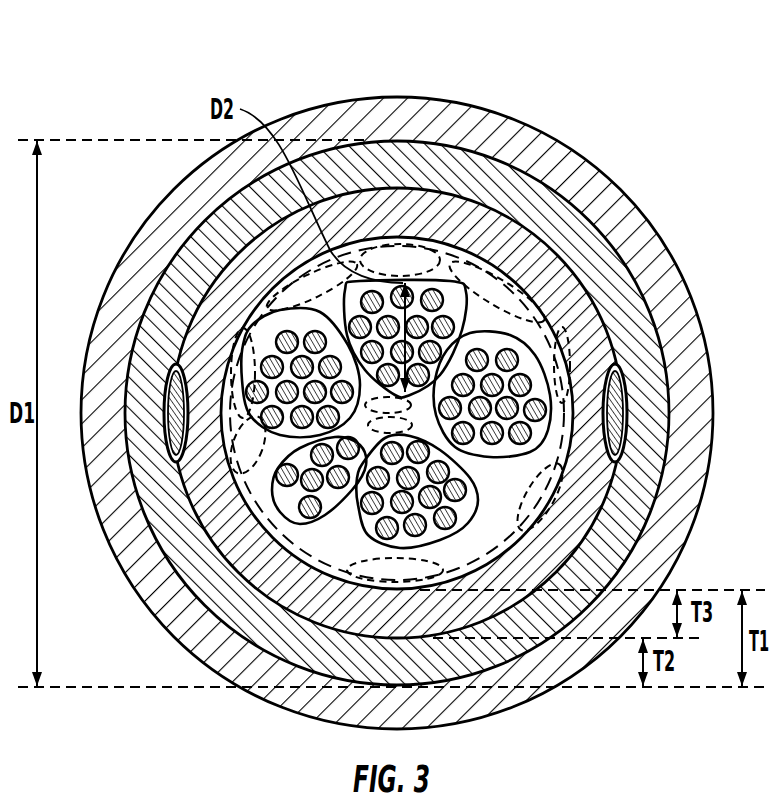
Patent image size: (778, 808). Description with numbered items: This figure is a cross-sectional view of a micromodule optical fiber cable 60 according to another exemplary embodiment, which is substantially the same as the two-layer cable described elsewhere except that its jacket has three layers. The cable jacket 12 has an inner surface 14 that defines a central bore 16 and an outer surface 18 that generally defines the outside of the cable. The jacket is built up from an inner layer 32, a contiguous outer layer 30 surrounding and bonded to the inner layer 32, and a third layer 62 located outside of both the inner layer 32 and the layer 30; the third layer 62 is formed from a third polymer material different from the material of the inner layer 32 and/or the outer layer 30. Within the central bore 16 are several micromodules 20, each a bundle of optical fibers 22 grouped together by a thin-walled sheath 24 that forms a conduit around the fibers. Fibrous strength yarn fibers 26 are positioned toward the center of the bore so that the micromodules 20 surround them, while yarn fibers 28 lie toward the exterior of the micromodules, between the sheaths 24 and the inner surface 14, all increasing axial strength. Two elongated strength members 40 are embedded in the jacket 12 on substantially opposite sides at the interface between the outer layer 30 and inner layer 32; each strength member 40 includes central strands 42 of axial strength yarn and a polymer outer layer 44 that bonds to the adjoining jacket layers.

The cable jacket 12 is at (333, 188).
The inner surface 14 is at (200, 535).
The central bore 16 is at (493, 465).
The outer surface 18 is at (397, 370).
The micromodules 20 is at (426, 290).
The optical fibers 22 is at (402, 429).
The sheaths 24 is at (258, 508).
The strength yarn fibers 26 is at (560, 450).
The yarn fibers 28 is at (595, 293).
The outer layer 30 is at (460, 157).
The inner layer 32 is at (467, 215).
The strength members 40 is at (402, 352).
The central strands 42 is at (615, 407).
The outer layer 44 is at (625, 368).
The cable 60 is at (667, 117).
The third layer 62 is at (587, 187).